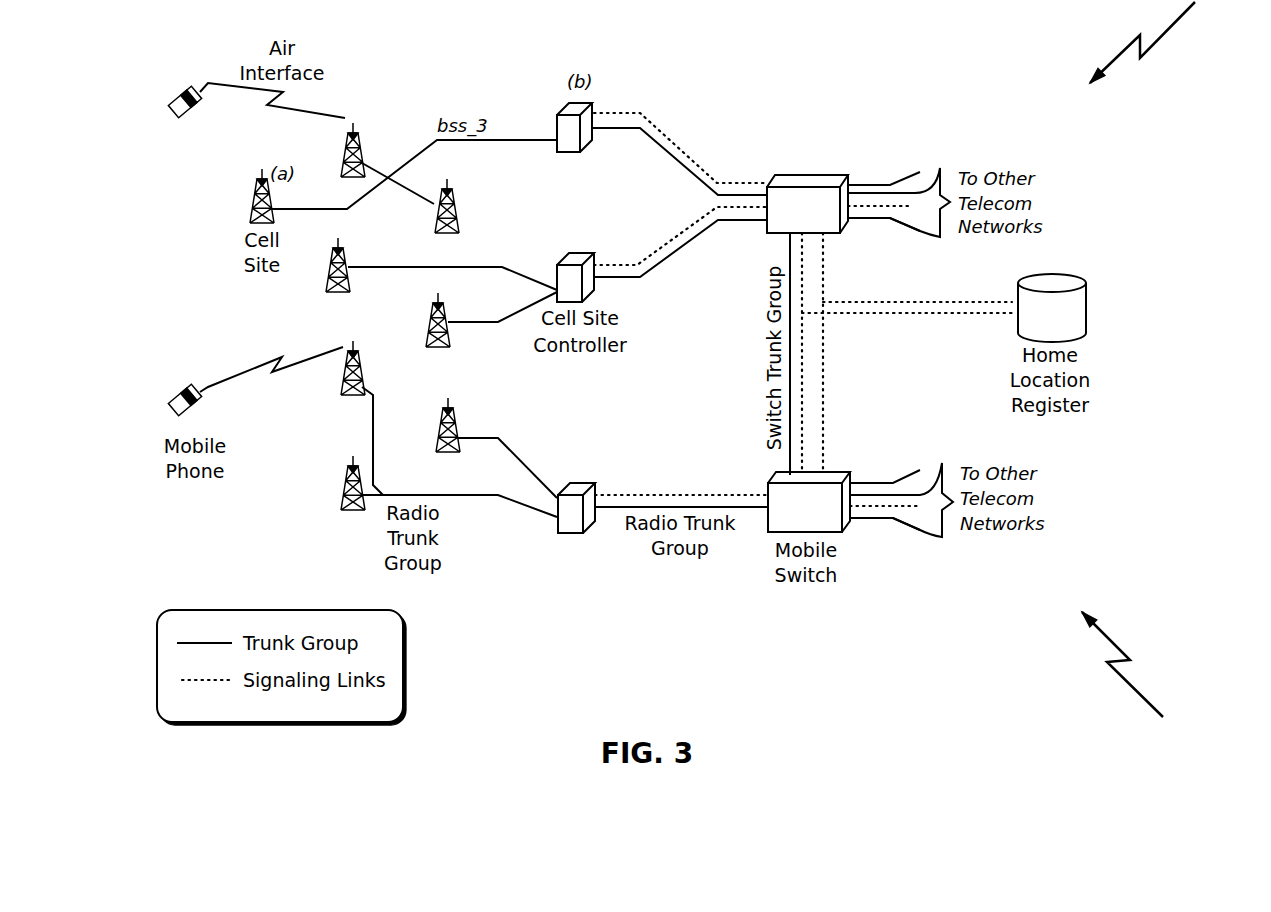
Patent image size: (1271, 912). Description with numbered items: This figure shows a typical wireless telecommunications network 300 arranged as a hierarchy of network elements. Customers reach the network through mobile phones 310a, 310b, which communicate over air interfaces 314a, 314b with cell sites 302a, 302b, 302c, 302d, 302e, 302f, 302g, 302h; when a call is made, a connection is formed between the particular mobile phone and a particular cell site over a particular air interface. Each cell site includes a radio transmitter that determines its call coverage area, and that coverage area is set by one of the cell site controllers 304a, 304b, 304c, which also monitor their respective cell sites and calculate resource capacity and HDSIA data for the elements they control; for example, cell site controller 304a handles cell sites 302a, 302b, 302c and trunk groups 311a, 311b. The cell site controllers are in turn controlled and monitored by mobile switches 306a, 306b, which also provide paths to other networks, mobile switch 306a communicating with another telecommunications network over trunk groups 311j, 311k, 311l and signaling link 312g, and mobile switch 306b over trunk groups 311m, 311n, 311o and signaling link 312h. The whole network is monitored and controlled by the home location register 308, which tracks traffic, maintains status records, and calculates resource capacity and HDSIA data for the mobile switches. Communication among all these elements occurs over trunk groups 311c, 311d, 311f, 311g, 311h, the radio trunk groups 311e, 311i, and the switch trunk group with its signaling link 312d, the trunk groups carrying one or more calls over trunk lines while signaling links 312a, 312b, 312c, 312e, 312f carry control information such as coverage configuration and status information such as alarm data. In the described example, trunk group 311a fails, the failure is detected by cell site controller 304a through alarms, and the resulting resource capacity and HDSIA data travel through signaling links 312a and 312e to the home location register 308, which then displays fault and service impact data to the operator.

The wireless telecommunication network 300 is at (1137, 680).
The cell site 302a is at (250, 193).
The cell site 302b is at (363, 137).
The cell site 302c is at (457, 197).
The cell site 302d is at (350, 260).
The cell site 302e is at (448, 313).
The cell site 302f is at (343, 370).
The cell site 302g is at (343, 487).
The cell site 302h is at (457, 420).
The cell site controller 304a is at (592, 105).
The cell site controller 304b is at (580, 252).
The cell site controller 304c is at (580, 483).
The mobile switch 306a is at (787, 173).
The mobile switch 306b is at (768, 542).
The home location register 308 is at (1070, 275).
The mobile phone 310a is at (172, 118).
The mobile phone 310b is at (173, 415).
The trunk group 311a is at (548, 138).
The trunk group 311b is at (402, 187).
The trunk group 311c is at (462, 327).
The trunk group 311d is at (453, 265).
The trunk group 311e is at (442, 495).
The trunk group 311f is at (512, 448).
The trunk group 311g is at (655, 135).
The trunk group 311h is at (677, 253).
The trunk group 311i is at (617, 510).
The trunk group 311j is at (860, 183).
The trunk group 311k is at (930, 163).
The trunk group 311l is at (857, 222).
The trunk group 311m is at (860, 480).
The trunk group 311n is at (937, 467).
The trunk group 311o is at (857, 518).
The signaling link 312a is at (703, 167).
The signaling link 312b is at (627, 267).
The signaling link 312c is at (655, 492).
The signaling link 312d is at (803, 353).
The signaling link 312e is at (853, 302).
The signaling link 312f is at (935, 315).
The signaling link 312g is at (937, 238).
The signaling link 312h is at (935, 537).
The air interface 314a is at (313, 108).
The air interface 314b is at (327, 352).